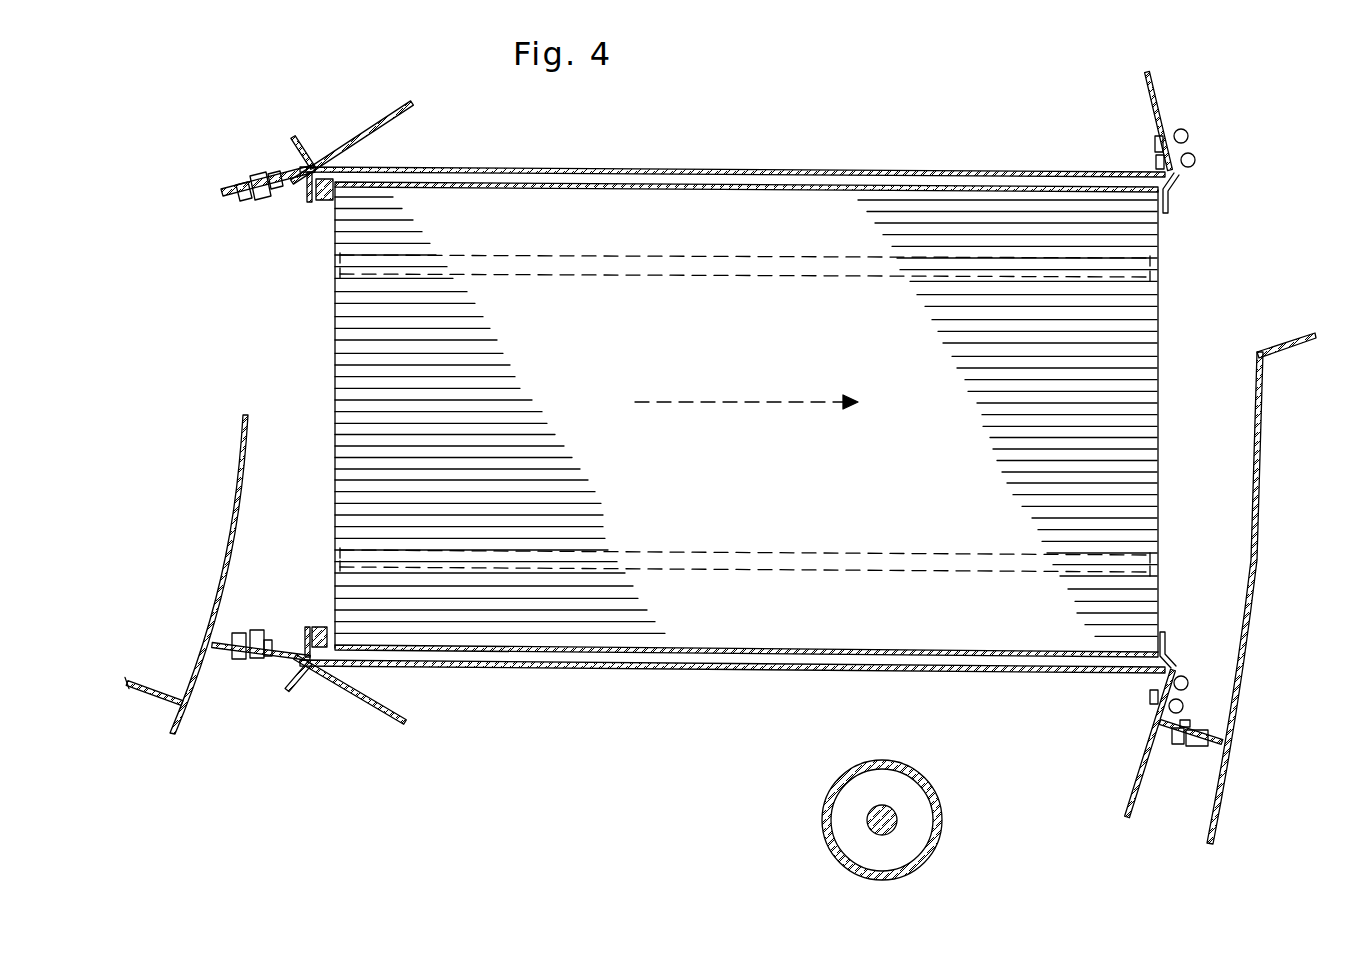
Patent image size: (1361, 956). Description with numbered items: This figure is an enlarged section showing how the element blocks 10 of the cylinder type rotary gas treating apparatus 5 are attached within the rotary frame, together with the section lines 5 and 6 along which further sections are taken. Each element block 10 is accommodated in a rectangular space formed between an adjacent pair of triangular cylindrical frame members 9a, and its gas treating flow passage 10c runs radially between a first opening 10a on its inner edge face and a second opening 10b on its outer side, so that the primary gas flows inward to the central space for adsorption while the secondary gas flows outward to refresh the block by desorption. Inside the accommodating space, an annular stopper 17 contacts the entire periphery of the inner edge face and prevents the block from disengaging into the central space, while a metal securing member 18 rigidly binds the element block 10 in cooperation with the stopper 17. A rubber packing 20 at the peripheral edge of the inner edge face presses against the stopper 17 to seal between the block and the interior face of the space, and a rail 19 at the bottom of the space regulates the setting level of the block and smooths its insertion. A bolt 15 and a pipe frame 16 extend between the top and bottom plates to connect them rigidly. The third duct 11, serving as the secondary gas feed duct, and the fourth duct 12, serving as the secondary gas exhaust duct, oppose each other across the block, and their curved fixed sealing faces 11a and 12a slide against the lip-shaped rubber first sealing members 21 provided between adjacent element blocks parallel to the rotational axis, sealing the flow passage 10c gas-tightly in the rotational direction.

The cylinder type rotary gas treating apparatus 5 is at (235, 285).
The section line 6- 6 is at (860, 105).
The triangular cylindrical frame member 9a is at (660, 168).
The element block 10 is at (326, 475).
The first opening 10a is at (322, 365).
The second opening 10b is at (1182, 427).
The treating flow passage 10c is at (709, 390).
The third duct 11 is at (148, 693).
The fixed sealing face 11a is at (227, 533).
The fourth duct 12 is at (1287, 352).
The fixed sealing face 12a is at (1253, 592).
The bolt 15 is at (872, 812).
The pipe frame 16 is at (938, 805).
The stopper 17 is at (308, 180).
The metal securing member 18 is at (1170, 193).
The rail 19 is at (690, 280).
The rubber packing 20 is at (323, 205).
The first sealing member 21 is at (222, 192).